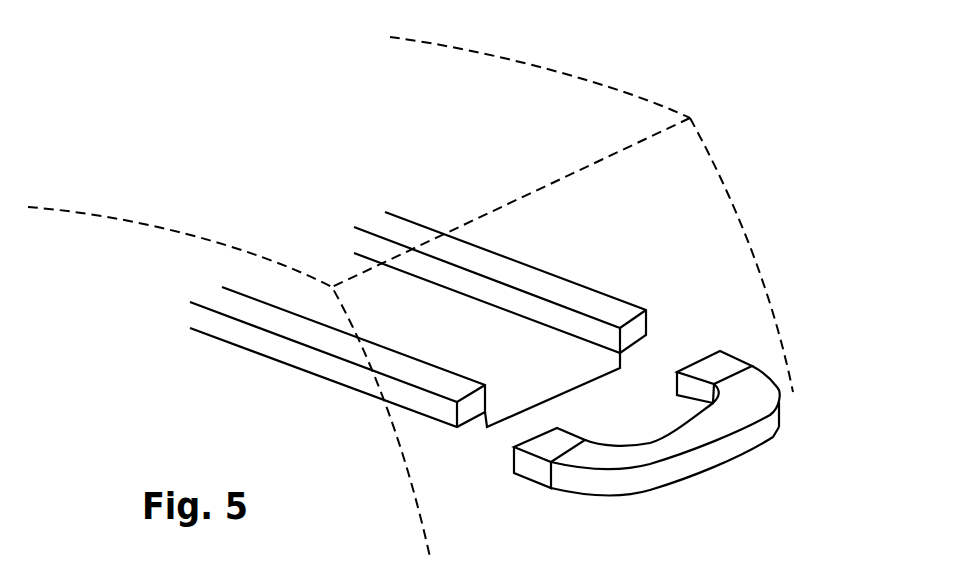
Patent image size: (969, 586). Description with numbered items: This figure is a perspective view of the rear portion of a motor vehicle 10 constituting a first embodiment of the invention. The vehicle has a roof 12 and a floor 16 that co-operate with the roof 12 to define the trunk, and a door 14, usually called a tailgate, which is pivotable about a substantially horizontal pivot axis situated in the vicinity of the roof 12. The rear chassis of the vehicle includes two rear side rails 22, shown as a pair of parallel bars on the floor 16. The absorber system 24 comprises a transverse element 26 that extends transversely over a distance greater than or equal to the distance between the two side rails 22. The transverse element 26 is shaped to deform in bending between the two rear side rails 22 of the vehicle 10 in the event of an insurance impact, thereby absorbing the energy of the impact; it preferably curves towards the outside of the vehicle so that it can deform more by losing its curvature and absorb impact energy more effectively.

The motor vehicle 10 is at (249, 94).
The roof 12 is at (552, 90).
The door 14 is at (705, 177).
The floor 16 is at (375, 316).
The rear side rails 22 is at (554, 288).
The absorber system 24 is at (800, 307).
The transverse element 26 is at (675, 465).